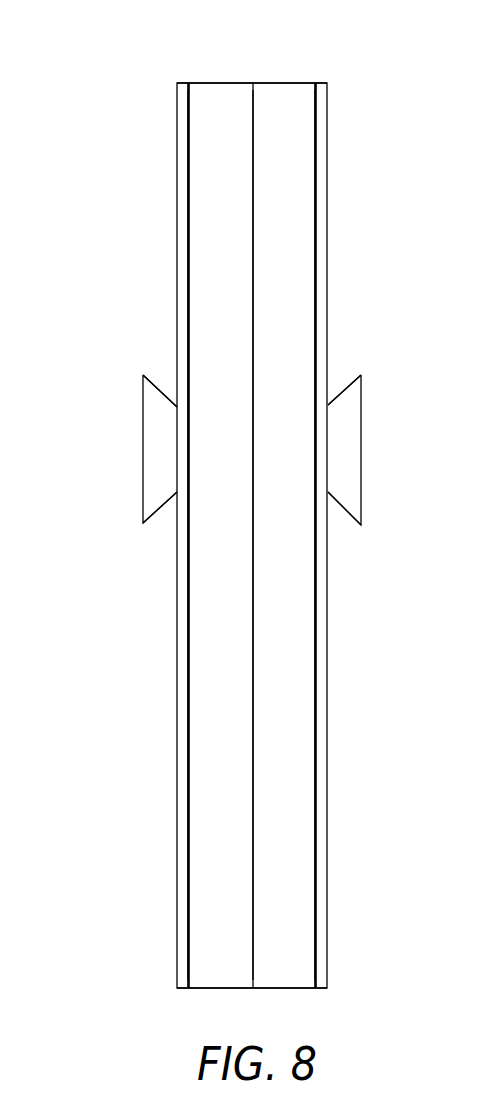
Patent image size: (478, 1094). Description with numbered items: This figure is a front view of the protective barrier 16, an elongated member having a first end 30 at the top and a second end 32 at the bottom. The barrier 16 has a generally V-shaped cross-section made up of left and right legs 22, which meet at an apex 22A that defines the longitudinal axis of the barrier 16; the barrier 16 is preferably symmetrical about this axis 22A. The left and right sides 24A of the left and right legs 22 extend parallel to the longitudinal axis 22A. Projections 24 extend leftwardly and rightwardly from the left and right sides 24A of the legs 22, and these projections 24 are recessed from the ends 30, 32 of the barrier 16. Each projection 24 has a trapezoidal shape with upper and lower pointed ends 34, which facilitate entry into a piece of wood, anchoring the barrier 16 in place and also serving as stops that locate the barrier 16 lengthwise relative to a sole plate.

The protective barrier 16 is at (110, 732).
The left and right legs 22 is at (232, 828).
The apex 22A is at (254, 128).
The projections 24 is at (155, 455).
The left and right sides 24A is at (181, 180).
The first end 30 is at (212, 83).
The second end 32 is at (295, 988).
The upper and lower pointed ends 34 is at (140, 373).